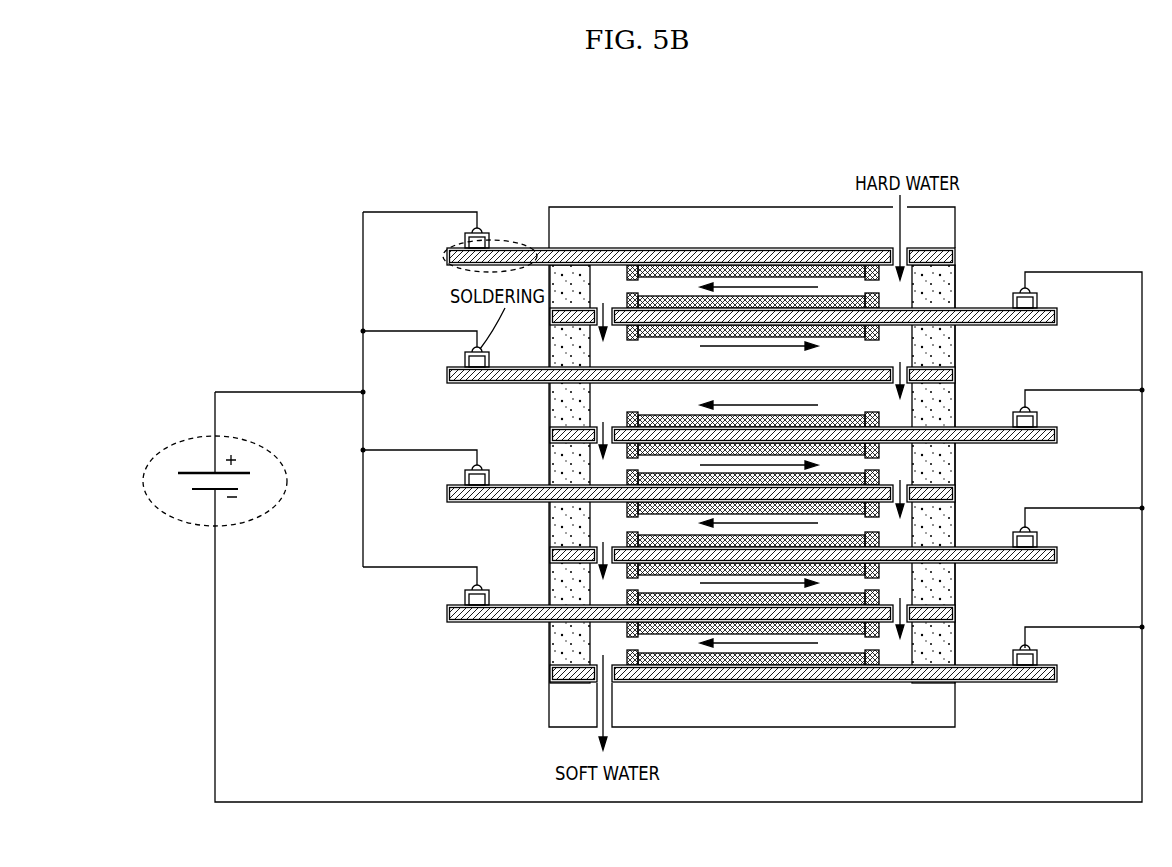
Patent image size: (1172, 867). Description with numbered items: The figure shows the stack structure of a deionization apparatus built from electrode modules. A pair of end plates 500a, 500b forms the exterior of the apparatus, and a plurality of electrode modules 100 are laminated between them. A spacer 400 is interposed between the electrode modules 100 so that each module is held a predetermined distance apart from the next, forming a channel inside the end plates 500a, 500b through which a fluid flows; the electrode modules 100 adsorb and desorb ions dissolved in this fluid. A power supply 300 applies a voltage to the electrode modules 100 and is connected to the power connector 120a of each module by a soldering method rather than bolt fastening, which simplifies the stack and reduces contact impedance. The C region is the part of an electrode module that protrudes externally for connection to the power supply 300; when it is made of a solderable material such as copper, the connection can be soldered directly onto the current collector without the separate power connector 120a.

The electrode module 100 is at (958, 352).
The power connector 120a is at (467, 356).
The power supply 300 is at (143, 478).
The spacer 400 is at (950, 580).
The end plate 500a is at (722, 207).
The end plate 500b is at (782, 727).
The C region C is at (490, 246).